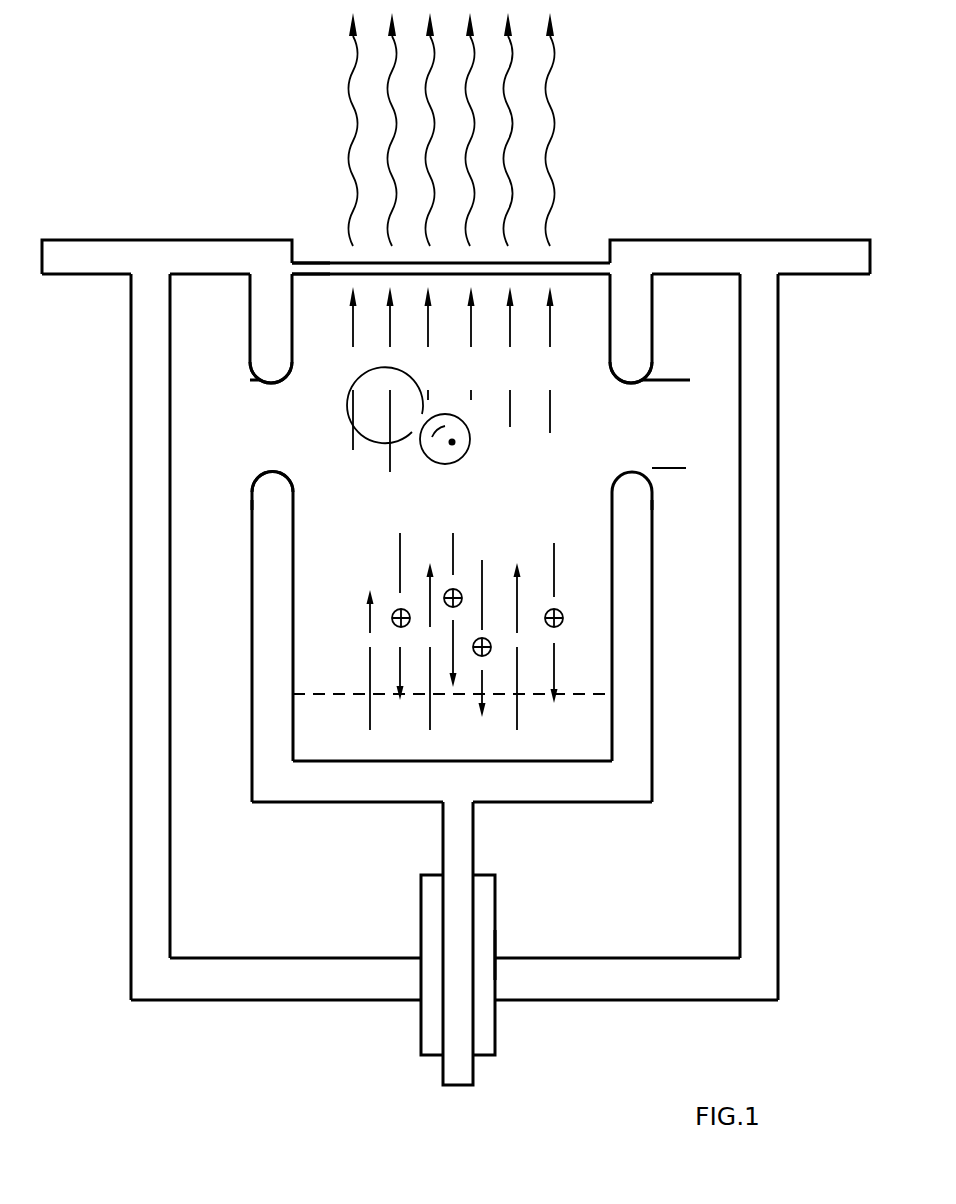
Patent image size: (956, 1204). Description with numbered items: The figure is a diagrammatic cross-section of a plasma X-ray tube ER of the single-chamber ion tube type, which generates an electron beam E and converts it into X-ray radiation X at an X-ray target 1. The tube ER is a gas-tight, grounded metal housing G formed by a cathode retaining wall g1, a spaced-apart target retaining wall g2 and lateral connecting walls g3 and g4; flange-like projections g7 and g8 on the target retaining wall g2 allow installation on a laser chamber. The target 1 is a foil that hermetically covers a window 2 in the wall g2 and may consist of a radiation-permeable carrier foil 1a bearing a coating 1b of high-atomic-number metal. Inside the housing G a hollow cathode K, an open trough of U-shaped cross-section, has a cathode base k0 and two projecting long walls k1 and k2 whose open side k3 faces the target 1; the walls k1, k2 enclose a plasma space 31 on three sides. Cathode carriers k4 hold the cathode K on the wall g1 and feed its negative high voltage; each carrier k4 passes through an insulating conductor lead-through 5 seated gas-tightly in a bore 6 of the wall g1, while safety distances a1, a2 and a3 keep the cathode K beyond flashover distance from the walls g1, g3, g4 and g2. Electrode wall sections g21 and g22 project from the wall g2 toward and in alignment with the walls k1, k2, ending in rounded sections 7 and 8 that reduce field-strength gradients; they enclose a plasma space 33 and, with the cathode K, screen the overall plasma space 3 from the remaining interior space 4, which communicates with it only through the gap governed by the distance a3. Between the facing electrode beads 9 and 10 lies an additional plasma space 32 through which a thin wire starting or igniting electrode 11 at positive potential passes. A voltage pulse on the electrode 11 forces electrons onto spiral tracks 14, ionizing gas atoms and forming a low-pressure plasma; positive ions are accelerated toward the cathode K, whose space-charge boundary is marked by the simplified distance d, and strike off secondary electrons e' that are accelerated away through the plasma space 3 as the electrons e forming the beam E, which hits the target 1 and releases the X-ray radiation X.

The X-ray radiation X is at (553, 100).
The gas-tight housing G is at (456, 624).
The cathode retaining wall g1 is at (237, 988).
The target retaining wall g2 is at (270, 240).
The lateral connecting wall g3 is at (131, 573).
The lateral connecting wall g4 is at (765, 575).
The flange-like projection g7 is at (60, 258).
The flange-like projection g8 is at (806, 258).
The electrode wall section g21 is at (250, 322).
The electrode wall section g22 is at (652, 336).
The X-ray target 1 is at (583, 263).
The carrier foil 1a is at (310, 263).
The coating 1b is at (313, 278).
The window 2 is at (327, 206).
The plasma space 3 is at (541, 508).
The remaining interior space 4 is at (443, 556).
The conductor lead-through 5 is at (428, 922).
The bore 6 is at (494, 972).
The rounded section 7 is at (254, 372).
The rounded section 8 is at (269, 480).
The electrode bead 9 is at (234, 494).
The electrode bead 10 is at (237, 352).
The starting or igniting electrode 11 is at (455, 442).
The spiral tracks 14 is at (466, 480).
The plasma space 31 is at (330, 583).
The additional plasma space 32 is at (371, 464).
The plasma space 33 is at (317, 338).
The electron beam E is at (467, 379).
The electrons e is at (452, 379).
The secondary electrons e' is at (449, 646).
The hollow cathode K is at (457, 764).
The cathode base k0 is at (527, 782).
The projecting wall k1 is at (252, 630).
The projecting wall k2 is at (654, 614).
The open side k3 is at (311, 477).
The cathode carrier k4 is at (463, 1068).
The safety distance a1 is at (350, 802).
The safety distance a2 is at (252, 721).
The safety distance a3 is at (678, 380).
The distance d is at (587, 694).
The plasma X-ray tube ER is at (778, 973).